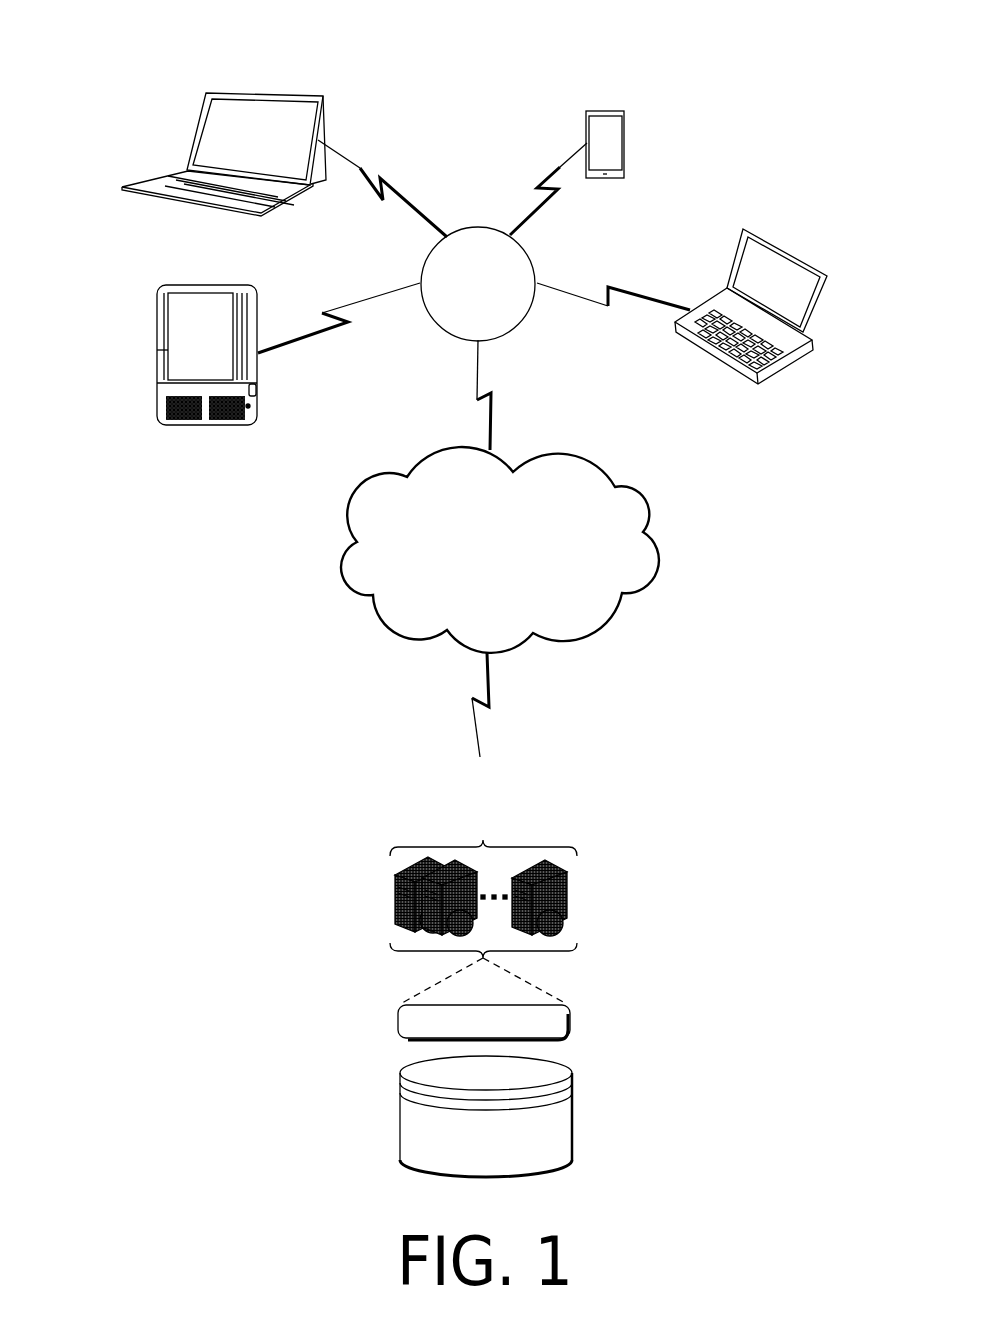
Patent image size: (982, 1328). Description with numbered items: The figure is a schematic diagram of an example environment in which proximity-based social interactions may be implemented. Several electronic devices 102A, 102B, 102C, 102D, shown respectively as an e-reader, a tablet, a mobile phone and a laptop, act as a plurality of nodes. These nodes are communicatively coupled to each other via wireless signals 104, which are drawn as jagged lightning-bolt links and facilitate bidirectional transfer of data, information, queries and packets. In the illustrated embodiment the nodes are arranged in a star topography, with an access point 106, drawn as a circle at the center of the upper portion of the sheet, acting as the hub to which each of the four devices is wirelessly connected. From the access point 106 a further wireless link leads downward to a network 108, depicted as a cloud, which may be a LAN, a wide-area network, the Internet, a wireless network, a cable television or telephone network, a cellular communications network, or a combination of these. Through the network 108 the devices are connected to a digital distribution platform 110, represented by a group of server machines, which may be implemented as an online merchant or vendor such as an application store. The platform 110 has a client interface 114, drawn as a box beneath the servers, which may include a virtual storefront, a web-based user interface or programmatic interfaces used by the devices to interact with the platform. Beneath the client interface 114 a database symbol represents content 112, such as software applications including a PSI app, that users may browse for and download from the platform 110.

The electronic device 102A is at (155, 325).
The electronic device 102B is at (193, 140).
The electronic device 102C is at (624, 111).
The electronic device 102D is at (787, 250).
The wireless signals 104 is at (570, 290).
The access point 106 is at (496, 307).
The network 108 is at (518, 572).
The digital distribution platform 110 is at (546, 826).
The content 112 is at (469, 1156).
The client interface 114 is at (546, 1032).